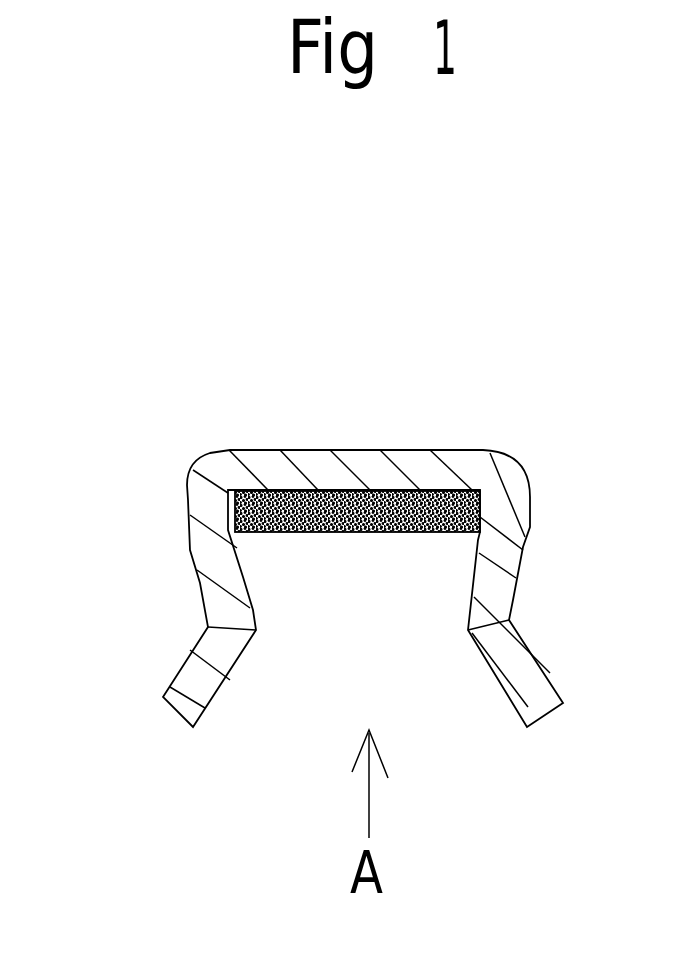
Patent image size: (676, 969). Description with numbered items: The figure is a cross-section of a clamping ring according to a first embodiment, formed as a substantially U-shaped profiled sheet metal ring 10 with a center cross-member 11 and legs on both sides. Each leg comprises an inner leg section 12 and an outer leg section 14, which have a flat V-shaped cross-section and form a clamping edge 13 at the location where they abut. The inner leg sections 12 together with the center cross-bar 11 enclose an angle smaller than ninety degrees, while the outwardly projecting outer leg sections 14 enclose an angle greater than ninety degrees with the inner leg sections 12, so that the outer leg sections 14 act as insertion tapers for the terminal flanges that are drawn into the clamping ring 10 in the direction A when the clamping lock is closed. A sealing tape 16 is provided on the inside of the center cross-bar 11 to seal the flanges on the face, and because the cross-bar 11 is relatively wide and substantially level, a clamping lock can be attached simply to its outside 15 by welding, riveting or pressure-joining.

The profiled sheet metal ring 10 is at (196, 471).
The center cross-member 11 is at (338, 450).
The inner leg section 12 is at (189, 550).
The clamping edge 13 is at (253, 634).
The outer leg section 14 is at (178, 673).
The outside of the center cross-bar 15 is at (433, 450).
The sealing tape 16 is at (343, 533).